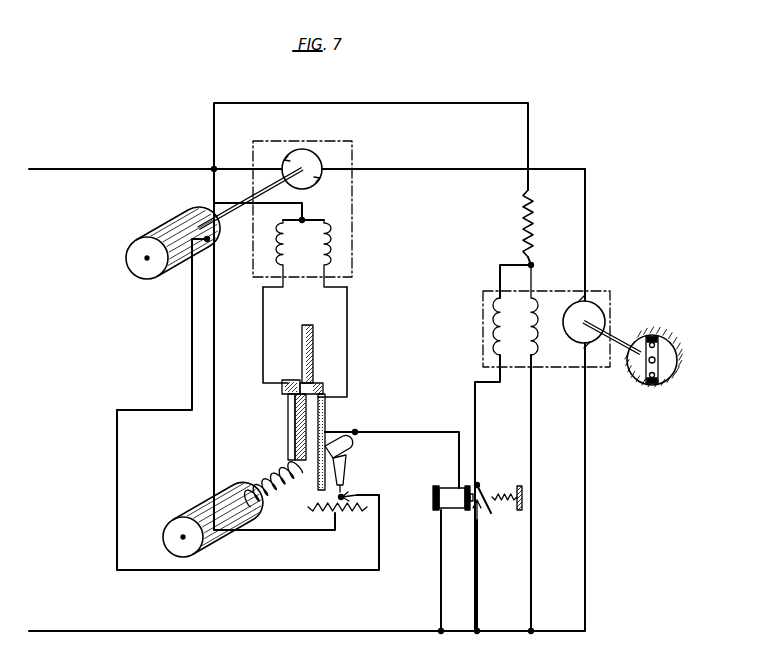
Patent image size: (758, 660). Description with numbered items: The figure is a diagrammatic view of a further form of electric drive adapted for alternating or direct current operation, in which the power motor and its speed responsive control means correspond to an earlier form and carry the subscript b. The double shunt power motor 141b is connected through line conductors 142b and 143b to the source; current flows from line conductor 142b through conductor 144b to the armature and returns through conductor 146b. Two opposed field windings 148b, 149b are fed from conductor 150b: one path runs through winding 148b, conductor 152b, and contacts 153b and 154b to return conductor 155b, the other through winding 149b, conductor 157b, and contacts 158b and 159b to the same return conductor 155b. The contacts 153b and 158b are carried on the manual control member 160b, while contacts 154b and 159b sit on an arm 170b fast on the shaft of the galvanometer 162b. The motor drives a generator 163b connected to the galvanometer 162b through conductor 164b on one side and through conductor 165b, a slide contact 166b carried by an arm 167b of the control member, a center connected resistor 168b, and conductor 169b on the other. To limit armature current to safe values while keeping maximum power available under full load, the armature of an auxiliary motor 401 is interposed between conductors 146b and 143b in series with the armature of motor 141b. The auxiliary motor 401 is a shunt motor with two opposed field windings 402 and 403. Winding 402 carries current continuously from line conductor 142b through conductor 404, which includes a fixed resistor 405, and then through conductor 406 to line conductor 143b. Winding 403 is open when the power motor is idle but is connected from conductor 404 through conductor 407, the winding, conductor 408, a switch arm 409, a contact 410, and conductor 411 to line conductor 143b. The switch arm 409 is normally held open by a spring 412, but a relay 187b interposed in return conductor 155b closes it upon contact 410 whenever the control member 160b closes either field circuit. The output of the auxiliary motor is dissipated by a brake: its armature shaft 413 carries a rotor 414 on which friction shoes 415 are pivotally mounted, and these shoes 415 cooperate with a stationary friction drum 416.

The line conductor 142b is at (123, 168).
The line conductor 143b is at (586, 490).
The conductor 144b is at (232, 168).
The double shunt motor 141b is at (366, 151).
The conductor 146b is at (440, 171).
The field winding 148b is at (278, 245).
The field winding 149b is at (332, 246).
The conductor 150b is at (214, 190).
The conductor 152b is at (263, 302).
The contact 153b is at (290, 380).
The contact 154b is at (292, 395).
The return conductor 155b is at (398, 431).
The conductor 157b is at (350, 310).
The contact 158b is at (325, 405).
The contact 159b is at (319, 382).
The manual control member 160b is at (326, 302).
The galvanometer 162b is at (166, 530).
The D. C. generator 163b is at (127, 259).
The conductor 164b is at (214, 368).
The conductor 165b is at (191, 316).
The slide contact 166b is at (346, 496).
The arm 167b is at (348, 464).
The center connected resistor 168b is at (358, 514).
The conductor 169b is at (300, 530).
The arm 170b is at (294, 438).
The relay 187b is at (450, 487).
The auxiliary motor 401 is at (620, 289).
The field winding 402 is at (537, 300).
The field winding 403 is at (493, 324).
The conductor 404 is at (458, 103).
The fixed resistor 405 is at (523, 205).
The conductor 406 is at (532, 492).
The conductor 407 is at (500, 265).
The conductor 408 is at (475, 382).
The switch arm 409 is at (478, 483).
The contact 410 is at (477, 520).
The conductor 411 is at (478, 612).
The spring 412 is at (500, 504).
The armature shaft 413 is at (620, 335).
The rotor 414 is at (662, 352).
The friction shoes 415 is at (660, 320).
The stationary friction drum 416 is at (678, 376).